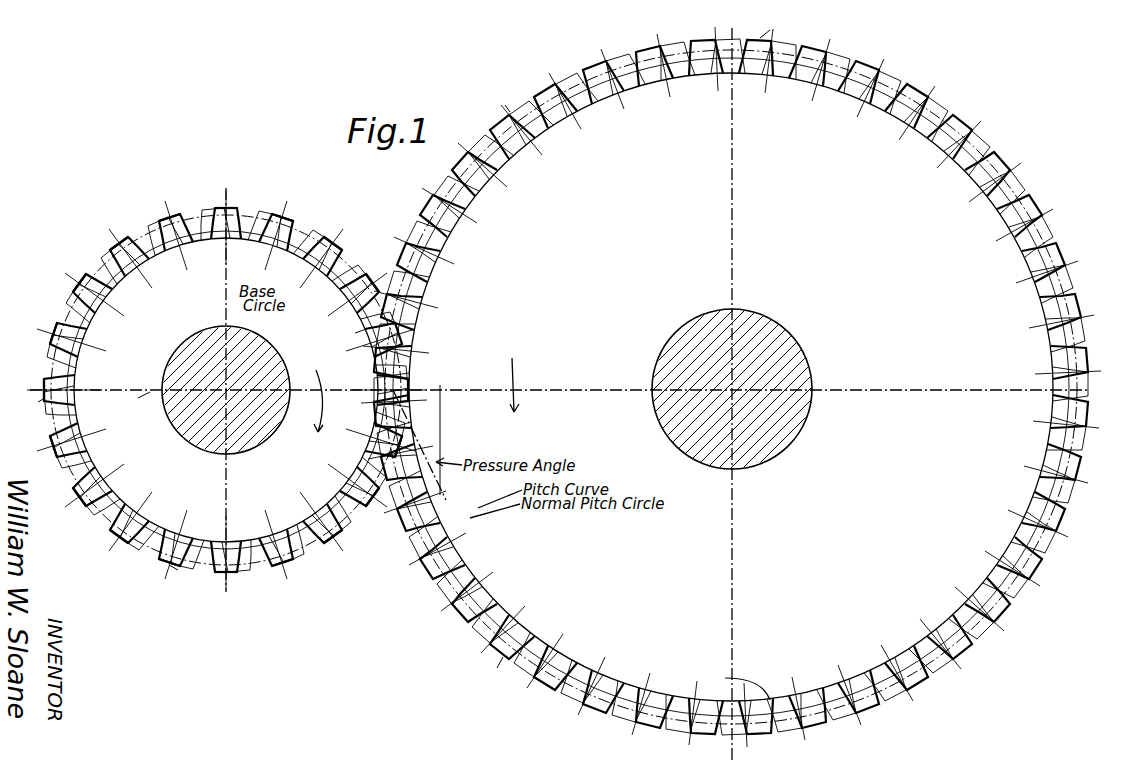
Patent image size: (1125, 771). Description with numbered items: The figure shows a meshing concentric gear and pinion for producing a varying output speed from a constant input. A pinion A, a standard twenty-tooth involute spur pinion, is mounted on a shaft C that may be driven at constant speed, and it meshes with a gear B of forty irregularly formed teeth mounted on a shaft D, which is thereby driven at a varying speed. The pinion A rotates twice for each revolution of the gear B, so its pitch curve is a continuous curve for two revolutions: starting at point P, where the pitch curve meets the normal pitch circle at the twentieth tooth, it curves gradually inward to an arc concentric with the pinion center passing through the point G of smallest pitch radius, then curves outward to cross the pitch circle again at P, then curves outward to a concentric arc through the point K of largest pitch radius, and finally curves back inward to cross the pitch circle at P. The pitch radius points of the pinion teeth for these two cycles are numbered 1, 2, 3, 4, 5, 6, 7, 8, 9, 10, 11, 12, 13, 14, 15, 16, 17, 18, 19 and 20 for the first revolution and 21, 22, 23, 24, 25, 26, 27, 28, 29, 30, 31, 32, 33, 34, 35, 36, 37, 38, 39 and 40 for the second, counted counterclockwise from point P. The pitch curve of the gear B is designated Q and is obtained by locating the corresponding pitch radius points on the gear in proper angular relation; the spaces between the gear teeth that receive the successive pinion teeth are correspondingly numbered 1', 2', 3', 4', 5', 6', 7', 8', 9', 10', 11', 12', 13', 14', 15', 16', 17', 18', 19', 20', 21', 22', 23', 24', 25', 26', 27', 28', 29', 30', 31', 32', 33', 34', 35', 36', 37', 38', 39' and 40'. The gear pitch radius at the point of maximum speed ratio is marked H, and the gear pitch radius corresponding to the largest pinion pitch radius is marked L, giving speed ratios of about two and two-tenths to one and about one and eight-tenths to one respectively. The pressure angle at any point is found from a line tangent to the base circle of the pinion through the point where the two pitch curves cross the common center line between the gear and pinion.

The pitch radius point 1 is at (379, 338).
The pitch radius point 2 is at (357, 294).
The pitch radius point 3 is at (318, 266).
The pitch radius point 4 is at (270, 239).
The pitch radius point 5 is at (221, 231).
The pitch radius point 6 is at (172, 237).
The pitch radius point 7 is at (128, 259).
The pitch radius point 8 is at (97, 298).
The pitch radius point 9 is at (71, 345).
The pitch radius point 10 is at (68, 392).
The pitch radius point 11 is at (74, 440).
The pitch radius point 12 is at (103, 484).
The pitch radius point 13 is at (140, 517).
The pitch radius point 14 is at (181, 541).
The pitch radius point 15 is at (226, 549).
The pitch radius point 16 is at (278, 544).
The pitch radius point 17 is at (317, 521).
The pitch radius point 18 is at (353, 482).
The pitch radius point 19 is at (376, 434).
The pitch radius point 20 is at (387, 387).
The pitch radius point 21 is at (343, 339).
The pitch radius point 22 is at (384, 267).
The pitch radius point 23 is at (348, 238).
The pitch radius point 24 is at (299, 209).
The pitch radius point 25 is at (243, 195).
The pitch radius point 26 is at (181, 203).
The pitch radius point 27 is at (127, 227).
The pitch radius point 28 is at (82, 268).
The pitch radius point 29 is at (45, 321).
The pitch radius point 30 is at (39, 376).
The pitch radius point 31 is at (40, 443).
The pitch radius point 32 is at (62, 495).
The pitch radius point 33 is at (103, 543).
The pitch radius point 34 is at (148, 567).
The pitch radius point 35 is at (213, 583).
The pitch radius point 36 is at (277, 574).
The pitch radius point 37 is at (329, 550).
The pitch radius point 38 is at (367, 513).
The pitch radius point 39 is at (394, 472).
The pitch radius point 40 is at (454, 440).
The gear tooth space 1' is at (396, 333).
The gear tooth space 2' is at (406, 276).
The gear tooth space 3' is at (424, 228).
The gear tooth space 4' is at (449, 192).
The gear tooth space 5' is at (482, 149).
The gear tooth space 6' is at (521, 112).
The gear tooth space 7' is at (566, 84).
The gear tooth space 8' is at (614, 68).
The gear tooth space 9' is at (665, 52).
The gear tooth space 10' is at (717, 48).
The gear tooth space 11' is at (767, 47).
The gear tooth space 12' is at (825, 61).
The gear tooth space 13' is at (873, 78).
The gear tooth space 14' is at (916, 103).
The gear tooth space 15' is at (958, 131).
The gear tooth space 16' is at (996, 166).
The gear tooth space 17' is at (1029, 206).
The gear tooth space 18' is at (1053, 254).
The gear tooth space 19' is at (1072, 306).
The gear tooth space 20' is at (1076, 358).
The gear tooth space 21' is at (1075, 417).
The gear tooth space 22' is at (1070, 473).
The gear tooth space 23' is at (1055, 522).
The gear tooth space 24' is at (1033, 567).
The gear tooth space 25' is at (996, 608).
The gear tooth space 26' is at (961, 645).
The gear tooth space 27' is at (903, 685).
The gear tooth space 28' is at (848, 706).
The gear tooth space 29' is at (796, 716).
The gear tooth space 30' is at (745, 719).
The gear tooth space 31' is at (694, 718).
The gear tooth space 32' is at (634, 709).
The gear tooth space 33' is at (583, 691).
The gear tooth space 34' is at (538, 667).
The gear tooth space 35' is at (485, 629).
The gear tooth space 36' is at (451, 591).
The gear tooth space 37' is at (424, 548).
The gear tooth space 38' is at (411, 507).
The gear tooth space 39' is at (424, 451).
The gear tooth space 40' is at (419, 383).
The pinion A is at (178, 570).
The gear B is at (497, 668).
The shaft C is at (197, 438).
The shaft D is at (700, 460).
The point of smallest pitch radius G is at (138, 398).
The gear pitch radius at maximum speed ratio H is at (770, 30).
The point of largest pitch radius K is at (38, 402).
The gear pitch radius for largest pinion pitch radius L is at (738, 684).
The intersection point P is at (388, 388).
The pitch curve of the gear Q is at (505, 105).